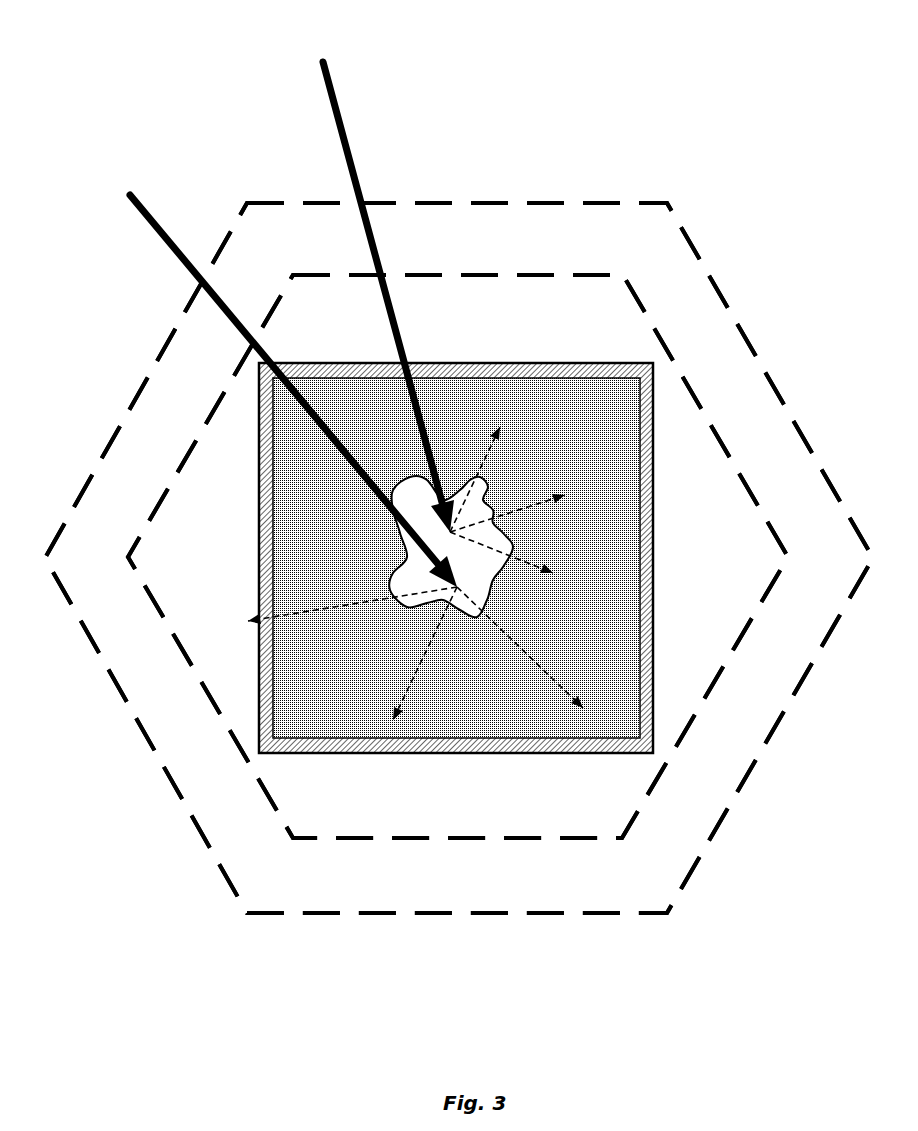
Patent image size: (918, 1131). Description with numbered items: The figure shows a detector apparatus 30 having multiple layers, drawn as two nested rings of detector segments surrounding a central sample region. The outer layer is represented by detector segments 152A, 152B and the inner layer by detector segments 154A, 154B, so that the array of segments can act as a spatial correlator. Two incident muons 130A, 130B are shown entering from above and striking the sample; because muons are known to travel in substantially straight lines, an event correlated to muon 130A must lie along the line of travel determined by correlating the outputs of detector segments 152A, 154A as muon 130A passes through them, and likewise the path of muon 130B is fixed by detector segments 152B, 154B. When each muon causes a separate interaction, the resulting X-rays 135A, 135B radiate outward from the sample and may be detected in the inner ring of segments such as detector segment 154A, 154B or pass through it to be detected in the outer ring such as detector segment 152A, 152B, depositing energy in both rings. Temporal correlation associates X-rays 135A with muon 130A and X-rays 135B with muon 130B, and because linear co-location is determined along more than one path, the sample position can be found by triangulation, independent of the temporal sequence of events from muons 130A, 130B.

The detector apparatus 30 is at (84, 44).
The muon 130A is at (345, 125).
The muon 130B is at (143, 205).
The detector segment 152A is at (385, 200).
The detector segment 152B is at (192, 295).
The detector segment 154A is at (397, 270).
The detector segment 154B is at (245, 352).
The X-rays 135A is at (557, 560).
The X-rays 135B is at (575, 712).